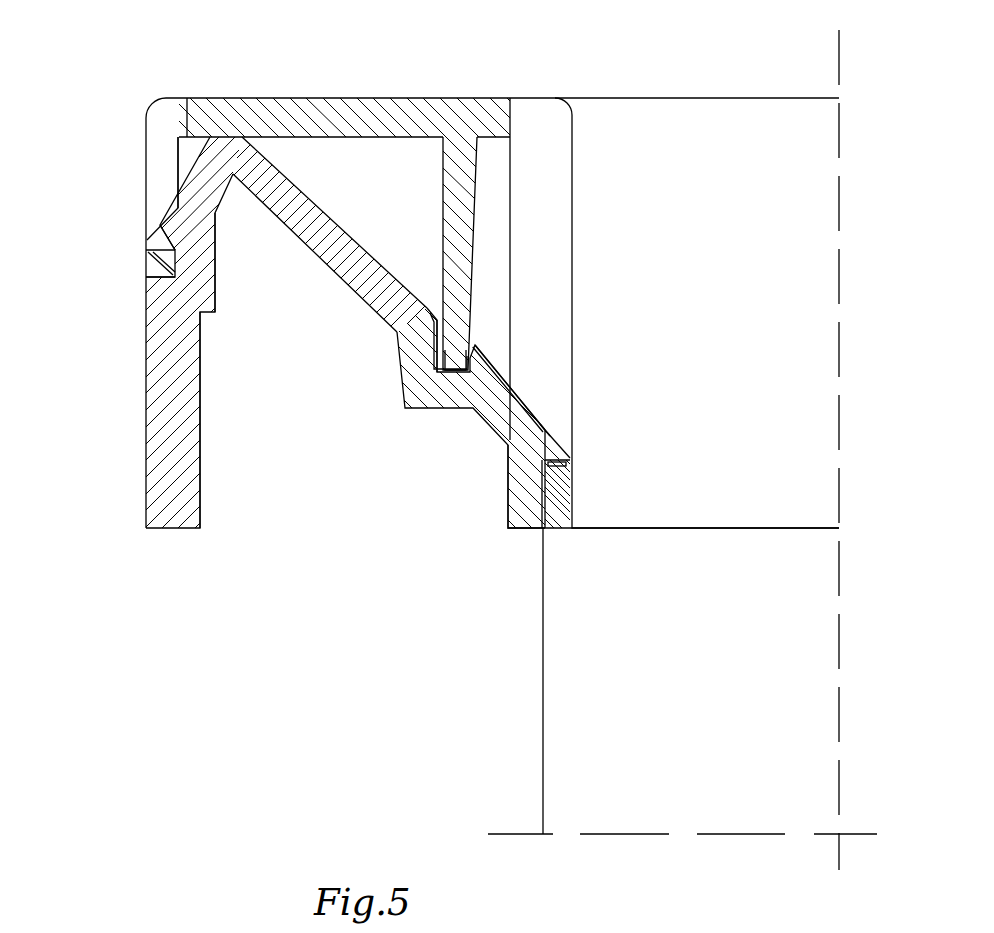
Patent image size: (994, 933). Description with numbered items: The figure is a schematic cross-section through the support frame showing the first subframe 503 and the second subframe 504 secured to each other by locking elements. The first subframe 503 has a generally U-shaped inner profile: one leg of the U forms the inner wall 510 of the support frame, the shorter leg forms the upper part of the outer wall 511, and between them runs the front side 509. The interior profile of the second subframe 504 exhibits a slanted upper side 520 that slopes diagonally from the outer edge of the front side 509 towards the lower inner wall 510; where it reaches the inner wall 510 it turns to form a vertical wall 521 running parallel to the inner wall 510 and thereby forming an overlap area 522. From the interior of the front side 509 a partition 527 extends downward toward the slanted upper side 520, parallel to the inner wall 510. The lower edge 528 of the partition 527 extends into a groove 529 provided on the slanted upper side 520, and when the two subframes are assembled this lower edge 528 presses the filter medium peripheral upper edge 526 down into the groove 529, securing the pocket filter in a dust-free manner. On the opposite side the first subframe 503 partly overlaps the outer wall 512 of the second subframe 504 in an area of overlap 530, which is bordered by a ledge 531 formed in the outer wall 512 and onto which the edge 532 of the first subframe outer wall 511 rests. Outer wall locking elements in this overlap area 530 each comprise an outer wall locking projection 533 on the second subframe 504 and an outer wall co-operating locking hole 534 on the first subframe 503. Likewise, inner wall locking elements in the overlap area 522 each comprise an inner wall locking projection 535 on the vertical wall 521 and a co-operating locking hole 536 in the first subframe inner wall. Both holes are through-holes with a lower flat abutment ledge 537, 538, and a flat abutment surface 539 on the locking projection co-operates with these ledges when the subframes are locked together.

The first subframe 503 is at (445, 193).
The second subframe 504 is at (205, 470).
The front side 509 is at (345, 97).
The inner wall 510 is at (573, 325).
The outer wall 511 is at (146, 135).
The outer wall of the second subframe 512 is at (174, 332).
The slanted upper side 520 is at (332, 230).
The vertical wall 521 is at (518, 490).
The overlap area 522 is at (457, 408).
The filter medium peripheral upper edge 526 is at (436, 328).
The partition 527 is at (462, 225).
The lower edge of the partition 528 is at (455, 355).
The groove 529 is at (595, 418).
The area of overlap 530 is at (237, 207).
The ledge 531 is at (155, 282).
The edge of the first subframe outer wall 532 is at (150, 258).
The outer wall locking projection 533 is at (168, 243).
The outer wall co-operating locking hole 534 is at (163, 198).
The inner wall locking projection 535 is at (552, 450).
The co-operating locking hole 536 is at (562, 424).
The lower flat abutment ledge 537 is at (175, 268).
The lower flat abutment ledge 538 is at (560, 475).
The flat abutment surface 539 is at (558, 463).